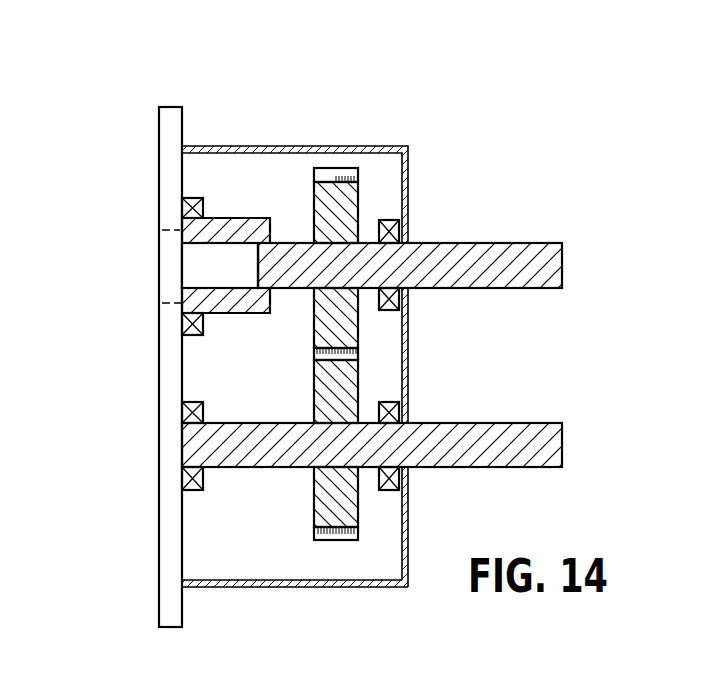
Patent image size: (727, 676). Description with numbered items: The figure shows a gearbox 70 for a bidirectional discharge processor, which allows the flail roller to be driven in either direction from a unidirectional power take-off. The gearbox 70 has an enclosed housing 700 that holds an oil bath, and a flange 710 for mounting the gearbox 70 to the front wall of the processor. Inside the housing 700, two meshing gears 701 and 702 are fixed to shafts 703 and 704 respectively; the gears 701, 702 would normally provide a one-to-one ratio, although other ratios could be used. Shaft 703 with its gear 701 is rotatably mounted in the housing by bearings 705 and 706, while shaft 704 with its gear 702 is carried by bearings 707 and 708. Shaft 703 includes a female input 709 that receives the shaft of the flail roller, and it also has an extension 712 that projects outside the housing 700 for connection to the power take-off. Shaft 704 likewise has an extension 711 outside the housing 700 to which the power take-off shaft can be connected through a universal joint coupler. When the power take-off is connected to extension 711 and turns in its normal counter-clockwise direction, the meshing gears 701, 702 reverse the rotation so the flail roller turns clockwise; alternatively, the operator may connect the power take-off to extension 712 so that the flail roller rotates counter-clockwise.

The gearbox 70 is at (383, 93).
The housing 700 is at (408, 205).
The gear 701 is at (358, 203).
The gear 702 is at (358, 380).
The shaft 703 is at (297, 241).
The shaft 704 is at (260, 470).
The bearing 705 is at (193, 198).
The bearing 706 is at (399, 230).
The bearing 707 is at (192, 403).
The bearing 708 is at (393, 402).
The female input 709 is at (202, 265).
The flange 710 is at (163, 602).
The extension 711 is at (560, 443).
The extension 712 is at (562, 265).